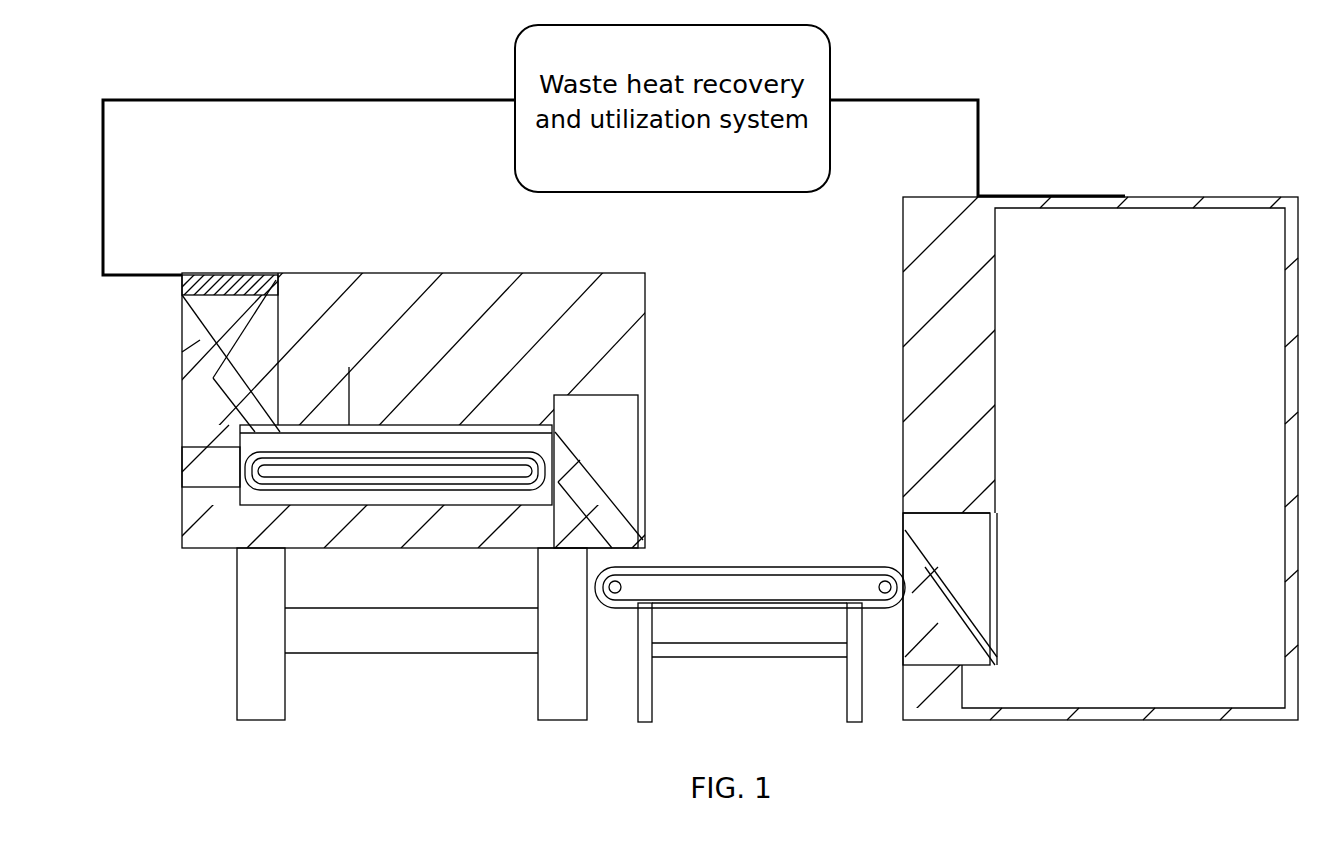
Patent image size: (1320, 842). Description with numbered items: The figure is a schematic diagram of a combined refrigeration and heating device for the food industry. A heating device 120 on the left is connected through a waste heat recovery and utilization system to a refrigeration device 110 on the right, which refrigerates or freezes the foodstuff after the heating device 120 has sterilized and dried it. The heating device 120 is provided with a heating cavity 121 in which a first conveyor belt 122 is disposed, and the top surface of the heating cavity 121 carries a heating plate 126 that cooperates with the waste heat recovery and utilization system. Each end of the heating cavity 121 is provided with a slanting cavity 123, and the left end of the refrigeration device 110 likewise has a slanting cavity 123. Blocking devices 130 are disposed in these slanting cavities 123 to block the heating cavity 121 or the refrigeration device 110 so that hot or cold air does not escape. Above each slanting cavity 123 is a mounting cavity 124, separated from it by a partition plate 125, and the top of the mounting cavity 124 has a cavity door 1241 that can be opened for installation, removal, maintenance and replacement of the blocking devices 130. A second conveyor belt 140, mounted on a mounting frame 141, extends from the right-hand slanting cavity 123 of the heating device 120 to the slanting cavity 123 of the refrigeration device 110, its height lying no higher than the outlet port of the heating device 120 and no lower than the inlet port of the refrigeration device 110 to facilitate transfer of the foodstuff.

The refrigeration device 110 is at (933, 368).
The heating device 120 is at (618, 298).
The heating cavity 121 is at (183, 487).
The first conveyor belt 122 is at (184, 447).
The slanting cavity 123 is at (200, 340).
The mounting cavity 124 is at (215, 312).
The cavity door 1241 is at (218, 280).
The partition plate 125 is at (278, 275).
The heating plate 126 is at (349, 367).
The blocking device 130 is at (182, 352).
The second conveyor belt 140 is at (677, 568).
The mounting frame 141 is at (680, 655).